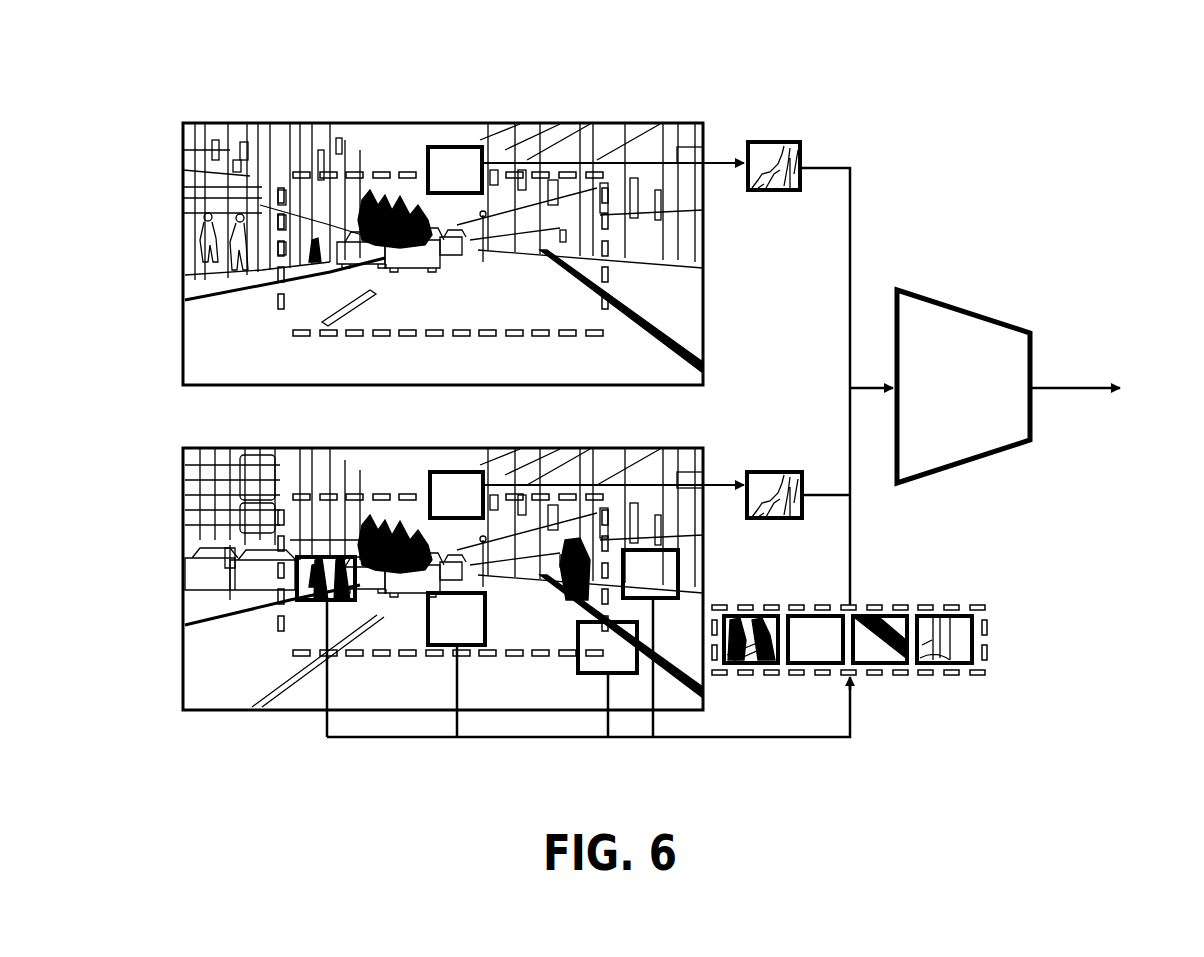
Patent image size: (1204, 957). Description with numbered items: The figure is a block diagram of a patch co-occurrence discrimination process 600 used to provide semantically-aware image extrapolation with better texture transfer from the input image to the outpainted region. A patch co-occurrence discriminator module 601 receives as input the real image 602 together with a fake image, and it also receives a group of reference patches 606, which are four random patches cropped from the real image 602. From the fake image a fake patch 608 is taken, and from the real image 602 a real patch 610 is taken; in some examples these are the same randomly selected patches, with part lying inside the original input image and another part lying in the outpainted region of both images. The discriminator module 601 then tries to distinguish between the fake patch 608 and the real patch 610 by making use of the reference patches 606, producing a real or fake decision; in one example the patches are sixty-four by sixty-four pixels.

The patch co-occurrence discrimination process 600 is at (1043, 94).
The patch co-occurrence discriminator module 601 is at (663, 121).
The real image 602 is at (228, 713).
The reference patches 606 is at (988, 632).
The fake patch 608 is at (778, 142).
The real patch 610 is at (790, 472).